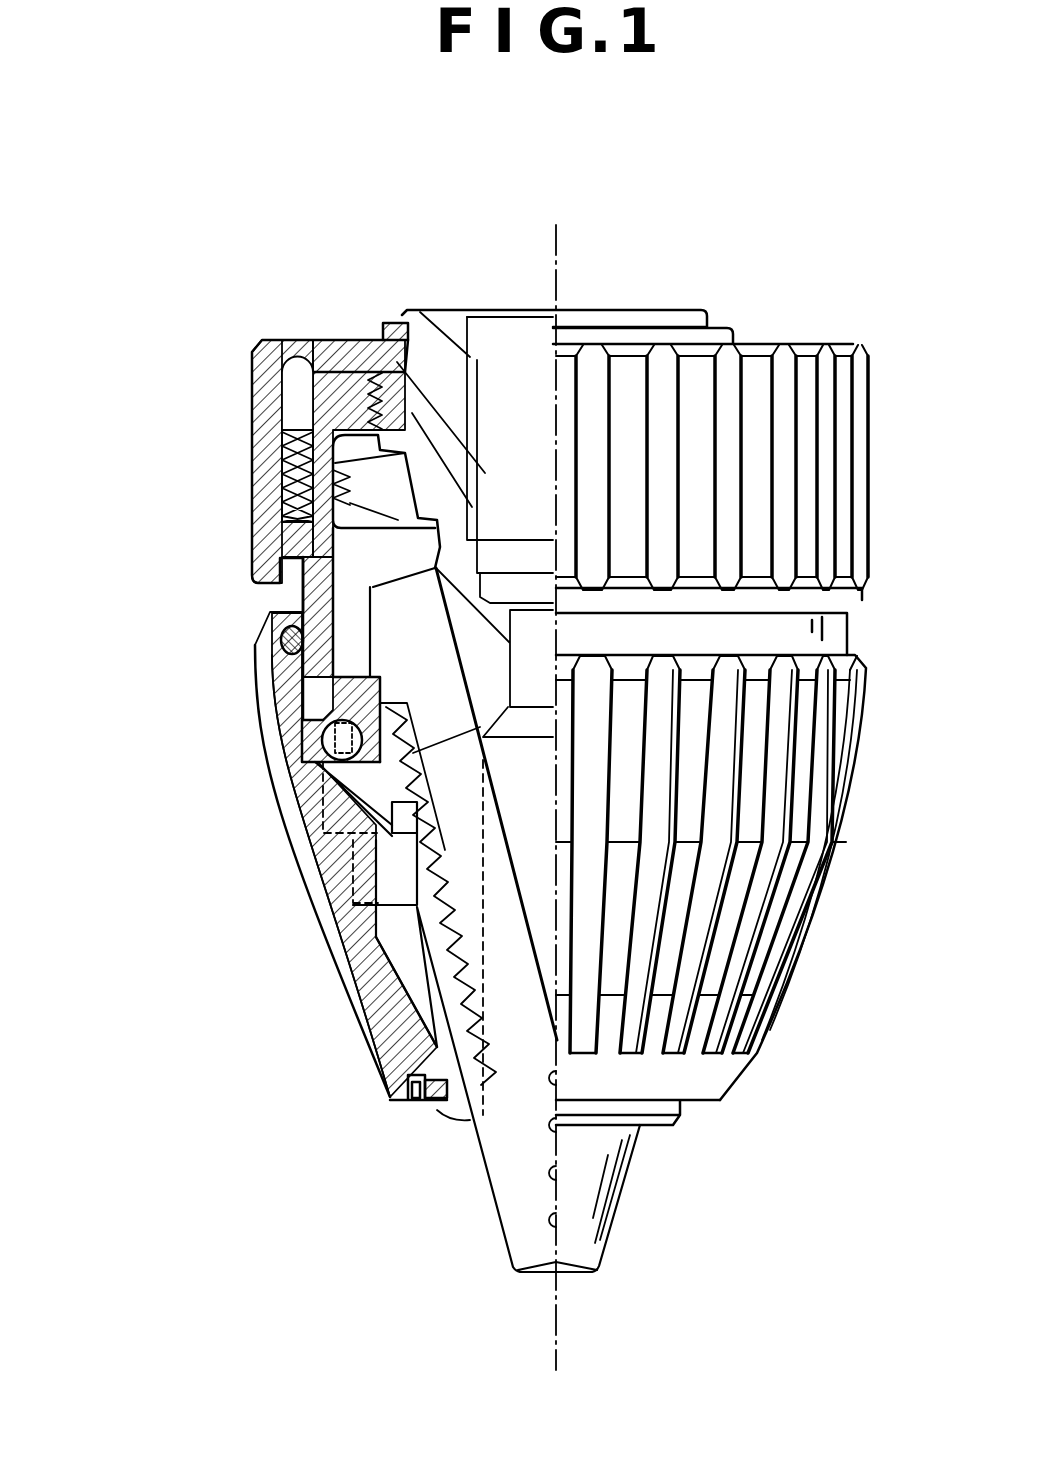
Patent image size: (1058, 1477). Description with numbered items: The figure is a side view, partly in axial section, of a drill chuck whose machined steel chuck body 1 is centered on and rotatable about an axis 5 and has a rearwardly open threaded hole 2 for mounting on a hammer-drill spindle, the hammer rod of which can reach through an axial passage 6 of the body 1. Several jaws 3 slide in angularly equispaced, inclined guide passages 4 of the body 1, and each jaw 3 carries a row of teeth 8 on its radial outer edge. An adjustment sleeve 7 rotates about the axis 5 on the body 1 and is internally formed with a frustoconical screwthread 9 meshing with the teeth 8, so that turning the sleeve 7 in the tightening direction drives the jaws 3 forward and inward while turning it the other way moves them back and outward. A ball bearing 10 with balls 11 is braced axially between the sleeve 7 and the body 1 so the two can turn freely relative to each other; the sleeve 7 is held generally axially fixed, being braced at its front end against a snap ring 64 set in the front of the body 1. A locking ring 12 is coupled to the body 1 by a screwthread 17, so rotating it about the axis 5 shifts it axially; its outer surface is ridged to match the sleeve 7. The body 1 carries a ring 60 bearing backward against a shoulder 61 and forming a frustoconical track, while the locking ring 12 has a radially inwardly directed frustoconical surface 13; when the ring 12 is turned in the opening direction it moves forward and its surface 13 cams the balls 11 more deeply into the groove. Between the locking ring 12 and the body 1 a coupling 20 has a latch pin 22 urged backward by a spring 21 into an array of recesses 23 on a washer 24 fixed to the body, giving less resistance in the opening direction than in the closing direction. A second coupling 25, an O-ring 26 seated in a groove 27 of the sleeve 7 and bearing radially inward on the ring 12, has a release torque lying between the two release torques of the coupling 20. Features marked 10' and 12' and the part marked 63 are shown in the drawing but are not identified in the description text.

The chuck body 1 is at (450, 357).
The threaded hole 2 is at (513, 357).
The jaws 3 is at (497, 1152).
The guide passages 4 is at (463, 718).
The axis 5 is at (553, 1300).
The axial passage 6 is at (543, 667).
The adjustment sleeve 7 is at (322, 871).
The teeth 8 is at (447, 950).
The frustoconical screwthread 9 is at (425, 764).
The ball bearing 10 is at (250, 758).
The ball raceway 10' is at (467, 761).
The balls 11 is at (340, 750).
The locking ring 12 is at (206, 461).
The cap band 12' is at (349, 383).
The outer track surface 13 is at (300, 713).
The screwthread 17 is at (420, 360).
The coupling 20 is at (284, 390).
The spring 21 is at (303, 397).
The latch pin 22 is at (350, 340).
The recesses 23 is at (288, 363).
The washer 24 is at (372, 342).
The coupling 25 is at (267, 642).
The O-ring 26 is at (310, 638).
The groove 27 is at (287, 630).
The ring 60 is at (312, 690).
The shoulder 61 is at (383, 690).
The end piece 63 is at (388, 1102).
The snap ring 64 is at (428, 1103).